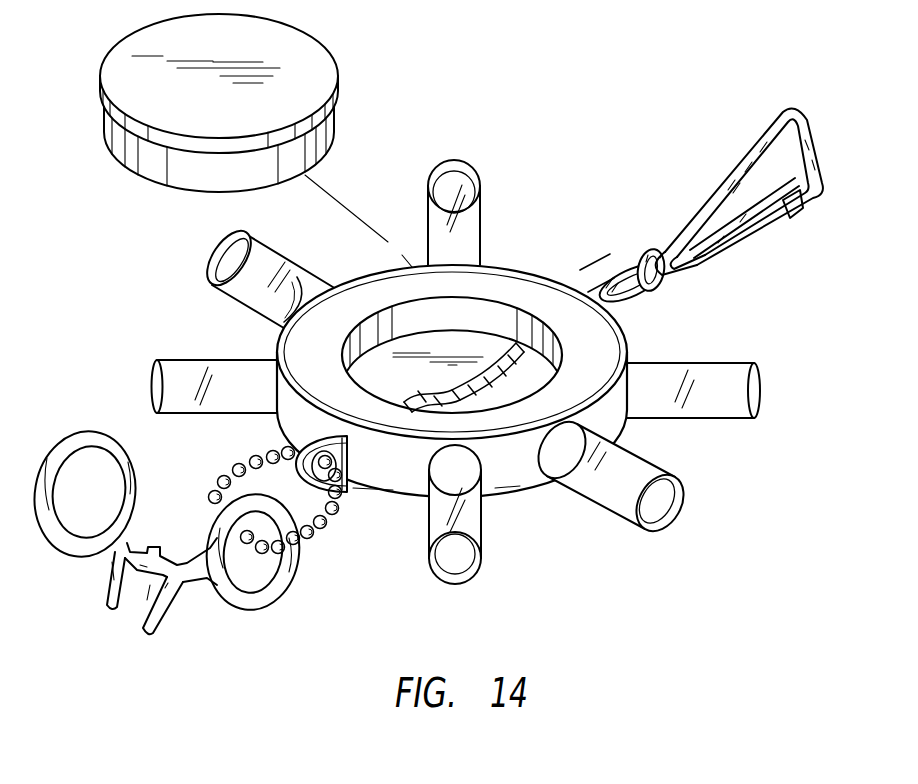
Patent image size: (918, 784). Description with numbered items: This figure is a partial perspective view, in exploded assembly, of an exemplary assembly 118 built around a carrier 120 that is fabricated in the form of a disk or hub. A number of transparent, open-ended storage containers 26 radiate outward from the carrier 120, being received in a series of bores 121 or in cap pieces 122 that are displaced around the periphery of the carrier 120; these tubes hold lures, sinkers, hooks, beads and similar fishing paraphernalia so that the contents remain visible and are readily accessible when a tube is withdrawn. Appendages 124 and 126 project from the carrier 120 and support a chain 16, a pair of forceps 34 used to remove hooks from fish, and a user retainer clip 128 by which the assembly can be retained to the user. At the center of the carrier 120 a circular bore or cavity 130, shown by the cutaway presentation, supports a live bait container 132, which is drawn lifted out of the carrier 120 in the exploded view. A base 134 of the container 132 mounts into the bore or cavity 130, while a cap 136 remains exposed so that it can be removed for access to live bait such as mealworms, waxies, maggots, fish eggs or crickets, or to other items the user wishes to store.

The chain 16 is at (302, 537).
The storage containers 26 is at (215, 284).
The forceps 34 is at (278, 594).
The assembly 118 is at (493, 370).
The carrier 120 is at (517, 500).
The bores 121 is at (548, 446).
The cap pieces 122 is at (306, 278).
The appendage 124 is at (292, 446).
The appendage 126 is at (603, 262).
The user retainer clip 128 is at (828, 174).
The circular bore or cavity 130 is at (563, 337).
The live bait container 132 is at (248, 114).
The base 134 is at (145, 176).
The cap 136 is at (290, 40).